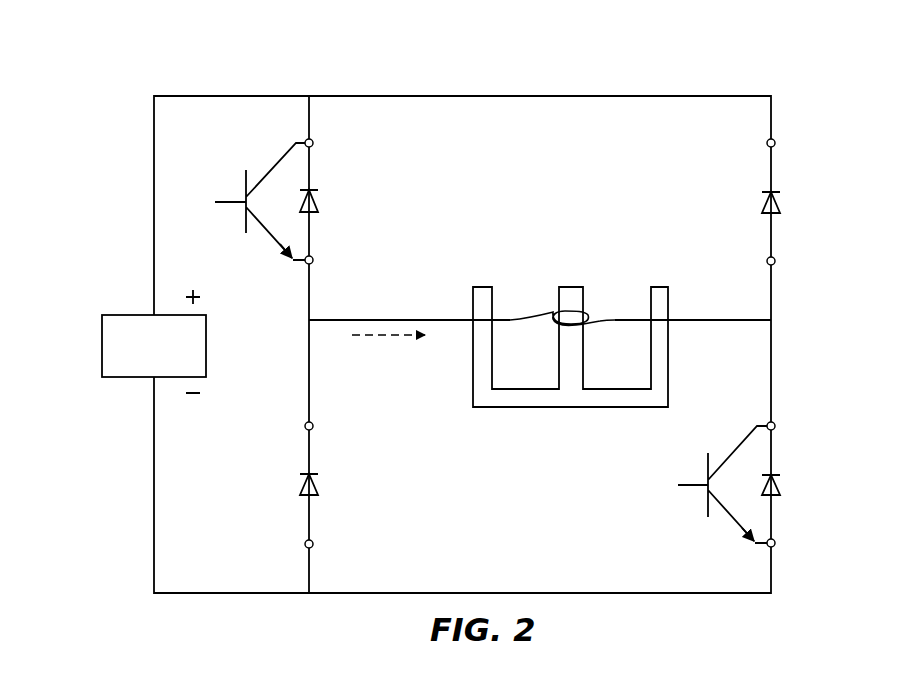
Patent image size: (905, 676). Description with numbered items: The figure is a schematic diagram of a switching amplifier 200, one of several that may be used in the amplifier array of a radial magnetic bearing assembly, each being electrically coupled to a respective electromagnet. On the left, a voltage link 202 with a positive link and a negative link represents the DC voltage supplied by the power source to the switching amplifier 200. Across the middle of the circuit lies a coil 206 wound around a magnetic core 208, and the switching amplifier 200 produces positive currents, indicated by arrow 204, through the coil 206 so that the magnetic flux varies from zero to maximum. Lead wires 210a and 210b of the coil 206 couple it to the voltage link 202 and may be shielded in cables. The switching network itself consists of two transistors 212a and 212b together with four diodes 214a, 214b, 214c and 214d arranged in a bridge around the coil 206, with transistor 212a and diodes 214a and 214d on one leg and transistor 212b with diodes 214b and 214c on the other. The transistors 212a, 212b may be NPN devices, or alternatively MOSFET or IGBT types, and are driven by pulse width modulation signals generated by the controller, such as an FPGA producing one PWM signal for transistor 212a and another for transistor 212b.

The switching amplifier 200 is at (114, 70).
The voltage link 202 is at (154, 341).
The arrow 204 is at (396, 337).
The coil 206 is at (571, 303).
The magnetic core 208 is at (563, 408).
The lead wire 210a is at (430, 318).
The lead wire 210b is at (722, 318).
The transistor 212a is at (234, 188).
The transistor 212b is at (697, 500).
The diode 214a is at (319, 206).
The diode 214b is at (781, 489).
The diode 214c is at (781, 207).
The diode 214d is at (319, 489).